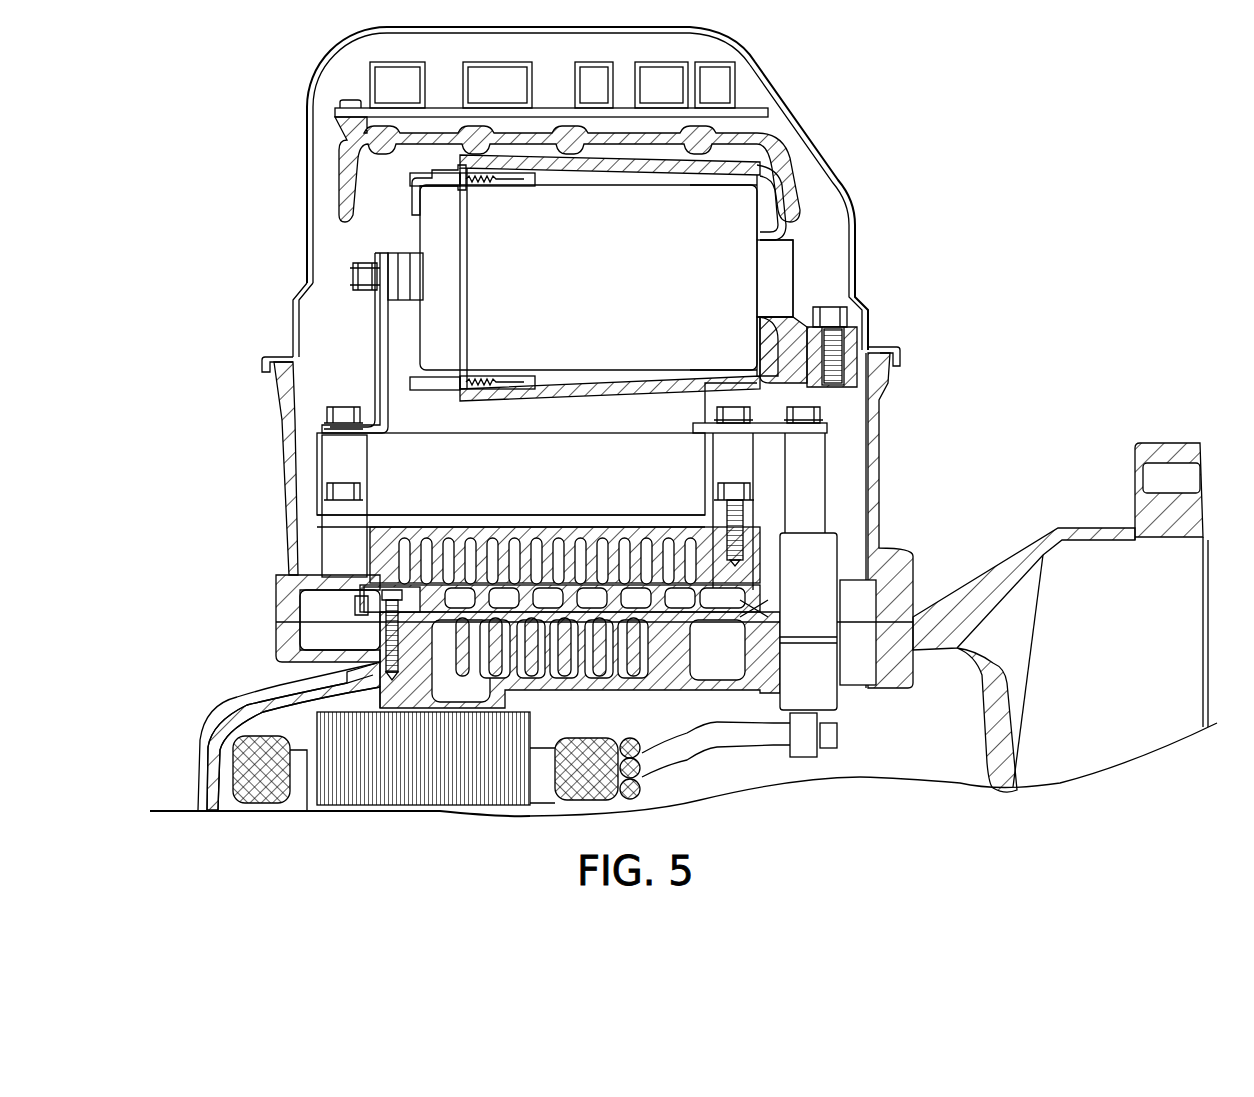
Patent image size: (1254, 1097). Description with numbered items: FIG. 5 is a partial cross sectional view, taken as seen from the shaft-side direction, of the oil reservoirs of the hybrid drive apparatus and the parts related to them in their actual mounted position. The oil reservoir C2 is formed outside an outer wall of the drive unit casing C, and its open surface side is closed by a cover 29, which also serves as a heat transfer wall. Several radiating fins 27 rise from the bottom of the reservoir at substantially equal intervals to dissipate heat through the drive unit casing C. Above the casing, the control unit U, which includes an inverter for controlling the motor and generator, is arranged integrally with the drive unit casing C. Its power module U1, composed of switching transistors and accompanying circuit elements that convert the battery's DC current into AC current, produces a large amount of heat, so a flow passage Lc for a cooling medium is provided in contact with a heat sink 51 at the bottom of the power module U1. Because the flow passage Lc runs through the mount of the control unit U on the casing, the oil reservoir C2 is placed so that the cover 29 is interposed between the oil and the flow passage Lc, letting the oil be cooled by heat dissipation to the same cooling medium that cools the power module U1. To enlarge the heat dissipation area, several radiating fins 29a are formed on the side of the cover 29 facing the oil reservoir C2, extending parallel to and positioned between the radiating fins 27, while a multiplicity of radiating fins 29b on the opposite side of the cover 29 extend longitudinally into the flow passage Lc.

The control unit U is at (587, 357).
The power module U1 is at (540, 481).
The heat sink 51 is at (432, 527).
The radiating fins 29b is at (614, 583).
The cover (heat transfer wall) 29 is at (357, 607).
The radiating fins 29a is at (538, 665).
The radiating fins 27 is at (643, 692).
The oil reservoir C2 is at (472, 693).
The flow passage for a cooling medium Lc is at (312, 637).
The drive unit casing C is at (278, 655).